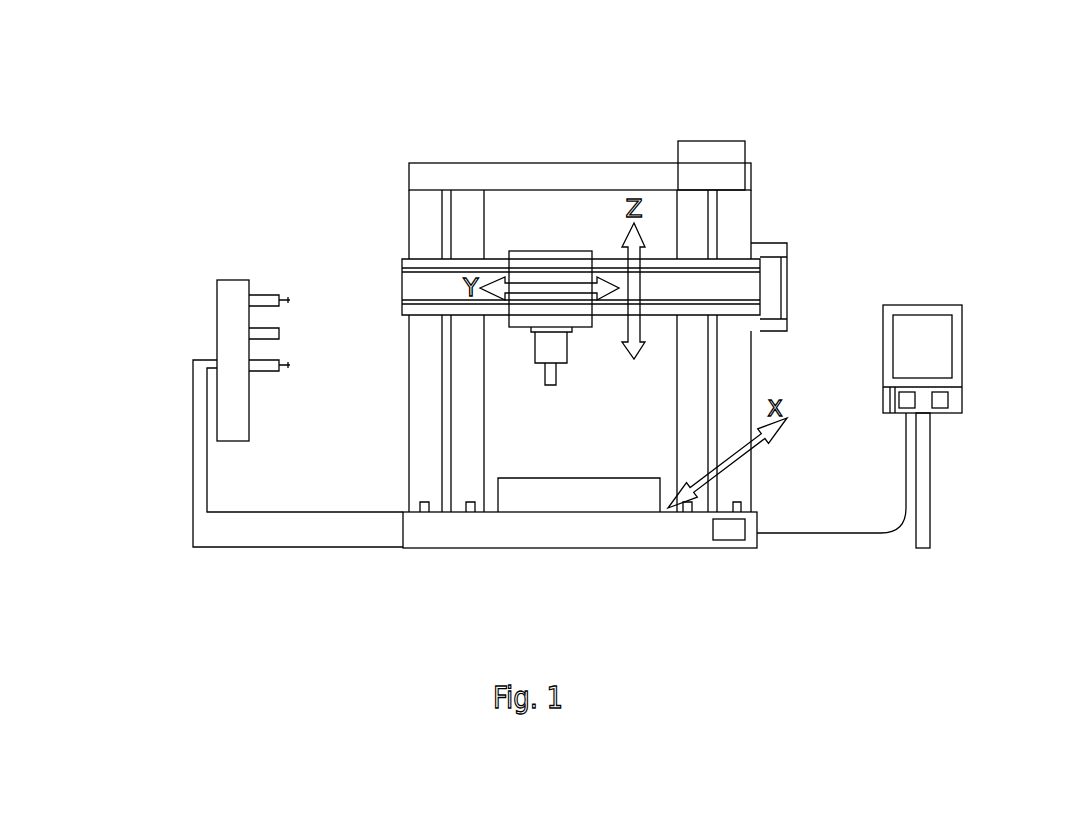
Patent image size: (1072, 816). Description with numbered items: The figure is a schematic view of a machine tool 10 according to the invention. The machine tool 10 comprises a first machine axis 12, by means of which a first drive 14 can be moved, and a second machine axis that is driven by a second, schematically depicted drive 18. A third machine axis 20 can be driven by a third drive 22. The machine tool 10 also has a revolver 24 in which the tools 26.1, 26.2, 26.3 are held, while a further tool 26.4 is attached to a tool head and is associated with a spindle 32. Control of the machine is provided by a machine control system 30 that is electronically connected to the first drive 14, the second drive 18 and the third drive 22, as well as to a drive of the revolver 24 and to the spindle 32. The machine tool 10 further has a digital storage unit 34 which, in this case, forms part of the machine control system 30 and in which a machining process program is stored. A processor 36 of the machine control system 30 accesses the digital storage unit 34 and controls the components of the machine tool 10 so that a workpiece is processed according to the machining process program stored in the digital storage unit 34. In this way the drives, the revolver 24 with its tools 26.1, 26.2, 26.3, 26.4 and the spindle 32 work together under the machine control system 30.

The machine tool 10 is at (771, 102).
The first machine axis 12 is at (755, 505).
The first drive 14 is at (727, 532).
The second drive 18 is at (766, 285).
The third machine axis 20 is at (714, 118).
The third drive 22 is at (737, 177).
The revolver 24 is at (229, 266).
The tool 26.1 is at (287, 288).
The tool 26.2 is at (266, 379).
The tool 26.3 is at (280, 334).
The tool 26.4 is at (558, 373).
The machine control system 30 is at (898, 307).
The spindle 32 is at (546, 352).
The digital storage unit 34 is at (948, 400).
The processor 36 is at (890, 407).